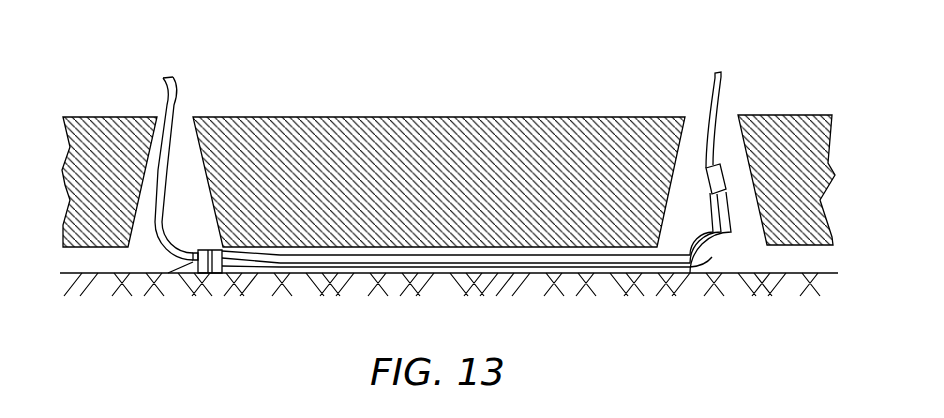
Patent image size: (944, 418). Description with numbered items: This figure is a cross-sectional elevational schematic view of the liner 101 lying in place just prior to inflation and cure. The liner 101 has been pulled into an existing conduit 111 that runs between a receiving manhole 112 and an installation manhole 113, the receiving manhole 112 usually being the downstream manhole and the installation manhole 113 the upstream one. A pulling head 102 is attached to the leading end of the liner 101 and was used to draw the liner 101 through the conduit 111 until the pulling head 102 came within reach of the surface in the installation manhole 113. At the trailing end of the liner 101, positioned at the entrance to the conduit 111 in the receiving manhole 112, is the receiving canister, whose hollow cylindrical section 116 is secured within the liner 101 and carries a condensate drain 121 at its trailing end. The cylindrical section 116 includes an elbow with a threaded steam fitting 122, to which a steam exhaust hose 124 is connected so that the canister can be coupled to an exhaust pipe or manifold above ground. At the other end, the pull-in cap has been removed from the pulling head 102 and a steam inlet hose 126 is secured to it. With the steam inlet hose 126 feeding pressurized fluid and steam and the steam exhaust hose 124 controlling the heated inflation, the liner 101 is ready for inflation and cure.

The liner 101 is at (296, 273).
The pulling head 102 is at (725, 177).
The existing conduit 111 is at (560, 250).
The receiving manhole 112 is at (183, 158).
The installation manhole 113 is at (753, 233).
The hollow cylindrical section 116 is at (237, 272).
The condensate drain 121 is at (203, 272).
The threaded steam fitting 122 is at (195, 270).
The steam exhaust hose 124 is at (160, 147).
The steam inlet hose 126 is at (722, 83).